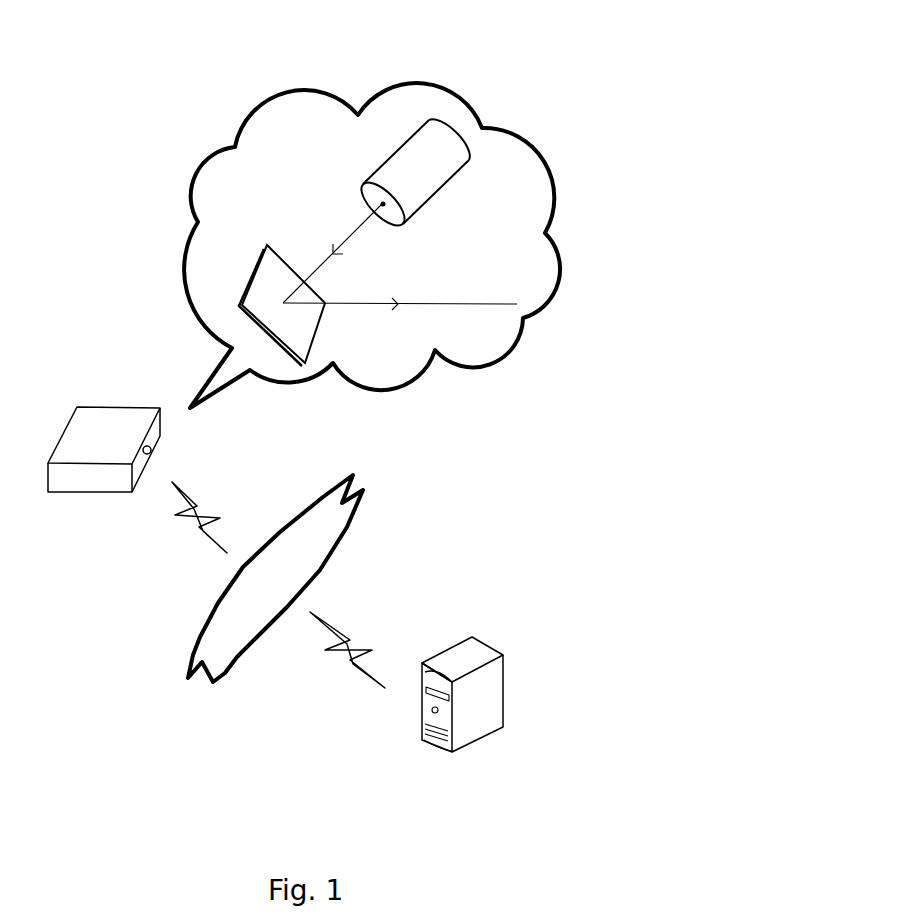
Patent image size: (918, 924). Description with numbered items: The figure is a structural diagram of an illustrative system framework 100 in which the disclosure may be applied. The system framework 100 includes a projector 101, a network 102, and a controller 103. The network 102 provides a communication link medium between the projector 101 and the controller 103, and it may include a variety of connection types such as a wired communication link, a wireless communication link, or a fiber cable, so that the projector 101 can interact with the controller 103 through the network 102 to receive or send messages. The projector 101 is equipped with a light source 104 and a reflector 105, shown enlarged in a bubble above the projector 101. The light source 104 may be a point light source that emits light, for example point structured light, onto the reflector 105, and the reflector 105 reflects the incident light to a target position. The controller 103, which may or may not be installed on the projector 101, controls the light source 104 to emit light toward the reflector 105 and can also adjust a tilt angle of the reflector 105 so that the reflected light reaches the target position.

The system framework 100 is at (570, 50).
The projector 101 is at (104, 463).
The network 102 is at (275, 578).
The controller 103 is at (462, 710).
The light source 104 is at (423, 175).
The reflector 105 is at (282, 293).